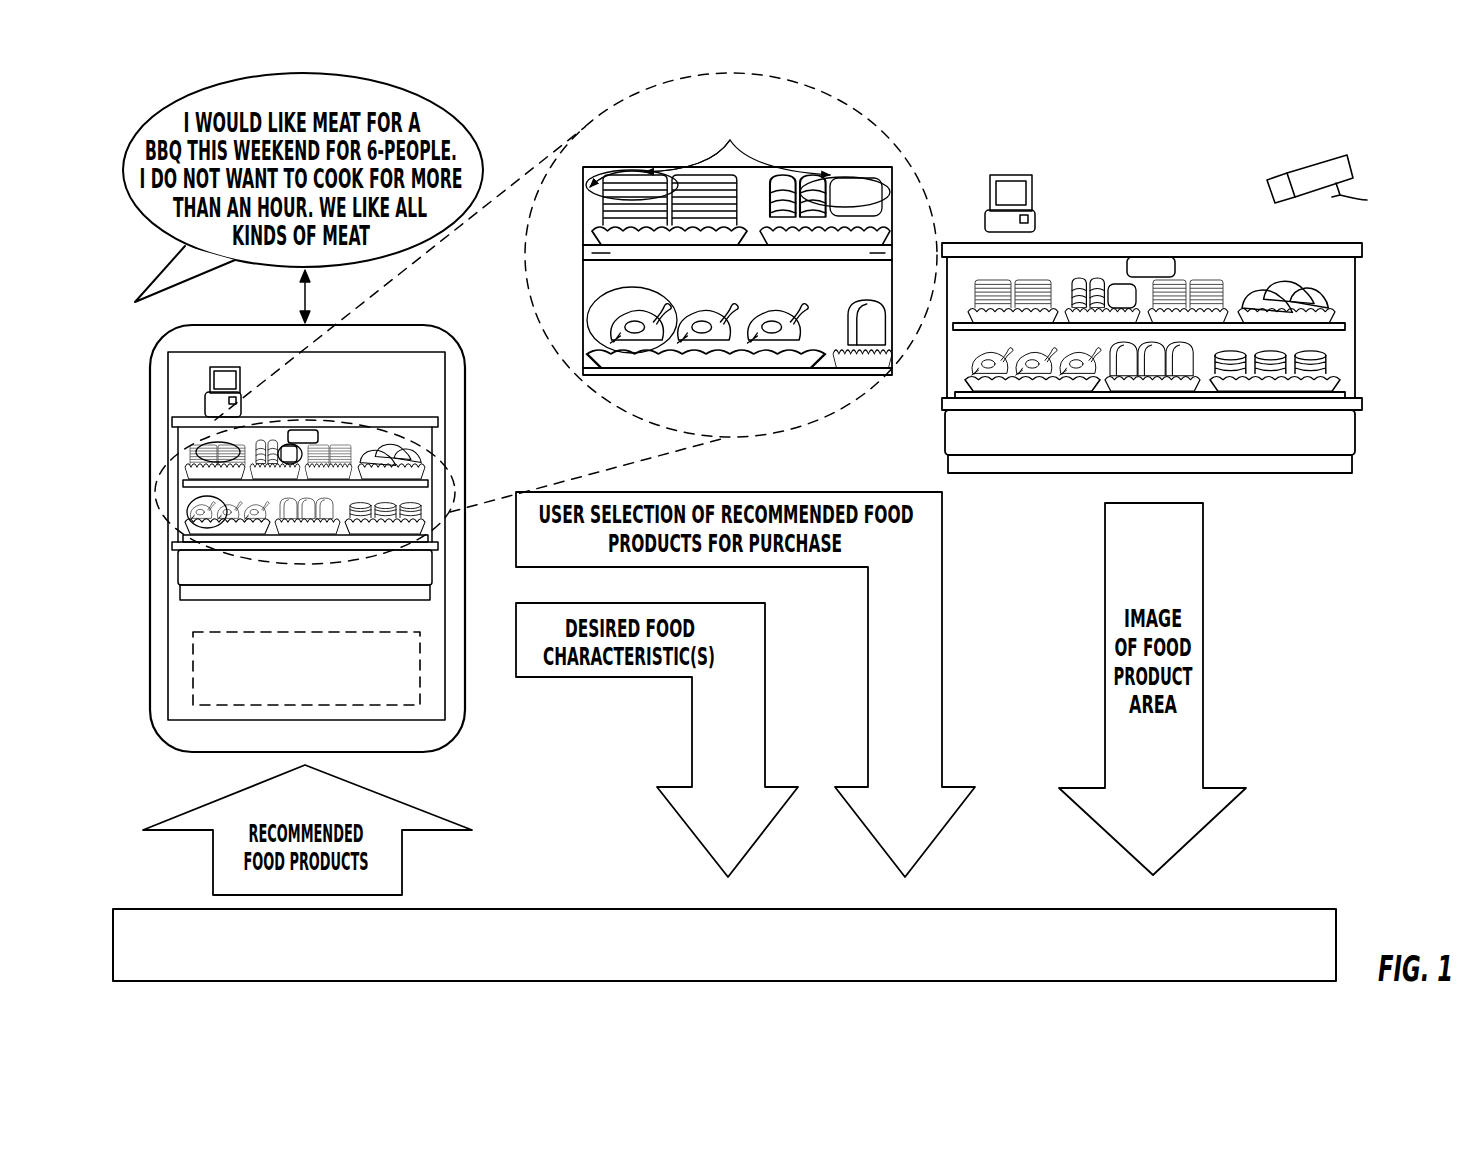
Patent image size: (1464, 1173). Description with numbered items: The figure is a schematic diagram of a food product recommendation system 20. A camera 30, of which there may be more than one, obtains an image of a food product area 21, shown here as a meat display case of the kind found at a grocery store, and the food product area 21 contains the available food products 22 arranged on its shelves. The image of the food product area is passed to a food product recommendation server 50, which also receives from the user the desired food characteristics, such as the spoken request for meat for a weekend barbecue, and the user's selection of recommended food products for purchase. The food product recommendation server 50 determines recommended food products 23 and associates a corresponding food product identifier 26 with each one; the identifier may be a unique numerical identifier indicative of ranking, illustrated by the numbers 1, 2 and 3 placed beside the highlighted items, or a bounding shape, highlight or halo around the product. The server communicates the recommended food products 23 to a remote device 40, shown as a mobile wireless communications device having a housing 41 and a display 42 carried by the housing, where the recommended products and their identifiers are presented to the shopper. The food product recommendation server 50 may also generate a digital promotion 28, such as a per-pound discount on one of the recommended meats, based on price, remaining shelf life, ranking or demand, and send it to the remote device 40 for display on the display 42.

The first food product 1 is at (620, 181).
The second food product 2 is at (856, 186).
The third food product 3 is at (615, 320).
The food product recommendation system 20 is at (968, 142).
The food product area 21 is at (1140, 223).
The available food products 22 is at (225, 526).
The recommended food products 23 is at (168, 475).
The food product identifier 26 is at (570, 178).
The digital promotion 28 is at (192, 672).
The camera 30 is at (1316, 170).
The remote device 40 is at (152, 338).
The housing 41 is at (152, 414).
The display 42 is at (185, 612).
The food product recommendation server 50 is at (1269, 887).